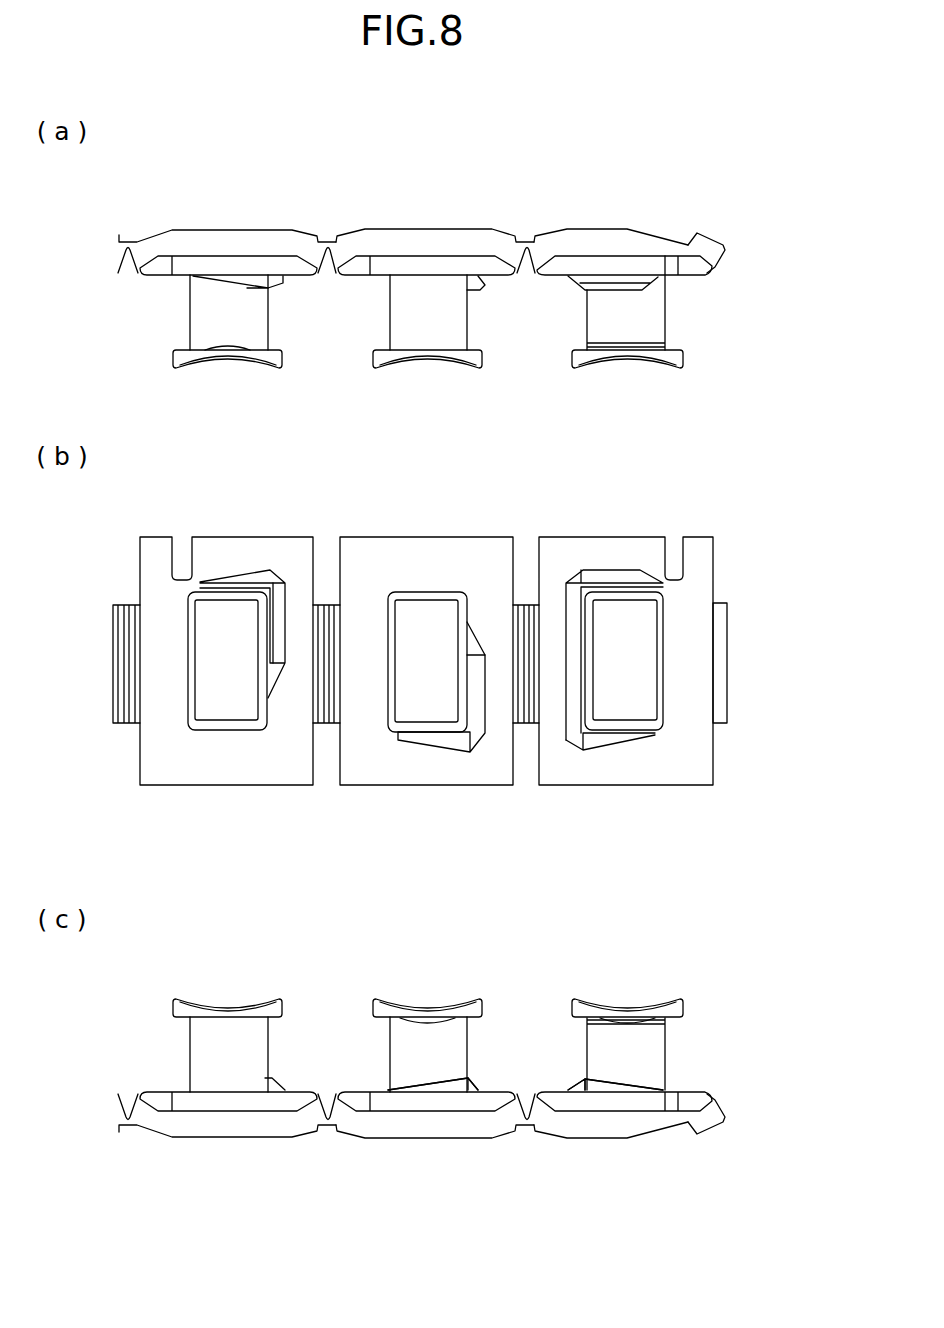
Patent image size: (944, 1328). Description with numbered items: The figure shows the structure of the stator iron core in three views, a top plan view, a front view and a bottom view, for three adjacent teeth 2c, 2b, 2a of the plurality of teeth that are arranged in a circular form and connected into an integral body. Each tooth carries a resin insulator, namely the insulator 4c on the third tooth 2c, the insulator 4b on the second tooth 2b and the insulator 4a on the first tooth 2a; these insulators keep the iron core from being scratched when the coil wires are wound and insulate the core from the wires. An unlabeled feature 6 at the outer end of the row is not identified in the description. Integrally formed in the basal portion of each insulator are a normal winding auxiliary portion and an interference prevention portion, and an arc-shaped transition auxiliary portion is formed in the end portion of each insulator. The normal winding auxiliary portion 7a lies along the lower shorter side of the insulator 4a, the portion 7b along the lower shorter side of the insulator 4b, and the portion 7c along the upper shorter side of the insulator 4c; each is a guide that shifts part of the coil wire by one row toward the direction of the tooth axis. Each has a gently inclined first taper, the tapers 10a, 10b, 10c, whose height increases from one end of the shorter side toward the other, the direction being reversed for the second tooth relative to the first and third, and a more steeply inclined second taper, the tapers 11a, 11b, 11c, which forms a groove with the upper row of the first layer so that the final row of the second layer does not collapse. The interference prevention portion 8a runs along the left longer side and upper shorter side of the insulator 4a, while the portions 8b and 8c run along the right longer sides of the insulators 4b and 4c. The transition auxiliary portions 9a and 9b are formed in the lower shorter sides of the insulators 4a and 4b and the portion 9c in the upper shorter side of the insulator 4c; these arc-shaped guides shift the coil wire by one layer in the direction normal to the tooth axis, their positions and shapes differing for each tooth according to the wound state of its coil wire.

The tooth 2a is at (576, 190).
The tooth 2b is at (390, 190).
The tooth 2c is at (183, 190).
The insulator 4a is at (650, 262).
The insulator 4b is at (472, 262).
The insulator 4c is at (265, 262).
The end tab 6 is at (707, 243).
The normal winding auxiliary portion 7a is at (605, 745).
The normal winding auxiliary portion 7b is at (455, 745).
The normal winding auxiliary portion 7c is at (343, 298).
The interference prevention portion 8a is at (625, 290).
The interference prevention portion 8b is at (483, 700).
The interference prevention portion 8c is at (285, 640).
The transition auxiliary portion 9a is at (630, 1022).
The transition auxiliary portion 9b is at (430, 1022).
The transition auxiliary portion 9c is at (225, 349).
The first taper 10a is at (640, 1090).
The first taper 10b is at (437, 1090).
The first taper 10c is at (250, 292).
The second taper 11a is at (585, 1090).
The second taper 11b is at (467, 1090).
The second taper 11c is at (283, 285).